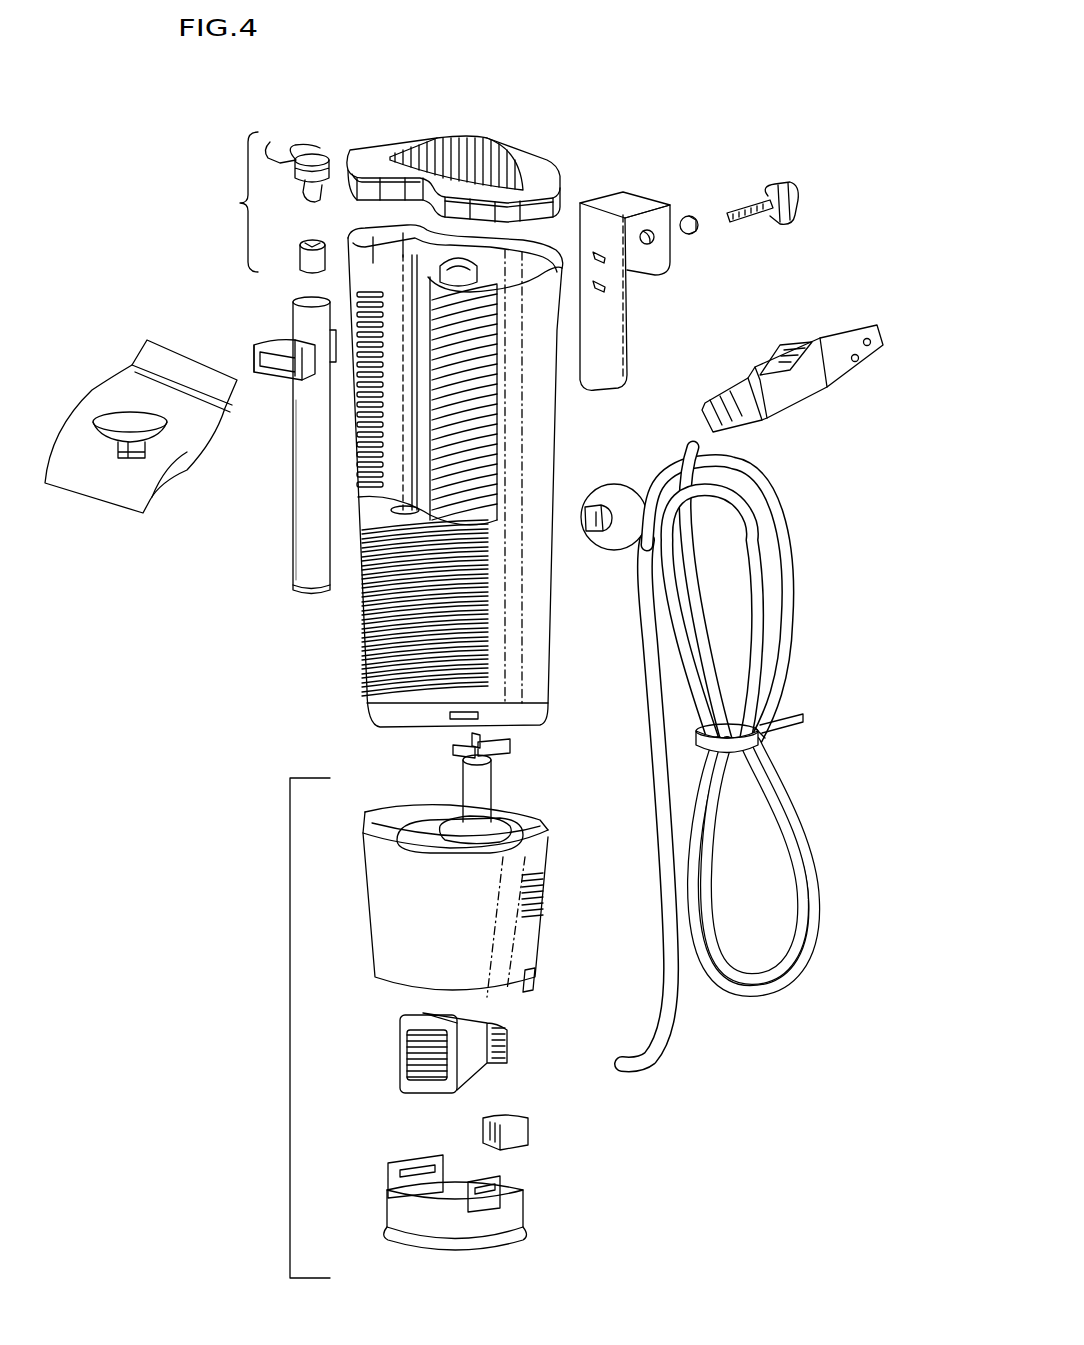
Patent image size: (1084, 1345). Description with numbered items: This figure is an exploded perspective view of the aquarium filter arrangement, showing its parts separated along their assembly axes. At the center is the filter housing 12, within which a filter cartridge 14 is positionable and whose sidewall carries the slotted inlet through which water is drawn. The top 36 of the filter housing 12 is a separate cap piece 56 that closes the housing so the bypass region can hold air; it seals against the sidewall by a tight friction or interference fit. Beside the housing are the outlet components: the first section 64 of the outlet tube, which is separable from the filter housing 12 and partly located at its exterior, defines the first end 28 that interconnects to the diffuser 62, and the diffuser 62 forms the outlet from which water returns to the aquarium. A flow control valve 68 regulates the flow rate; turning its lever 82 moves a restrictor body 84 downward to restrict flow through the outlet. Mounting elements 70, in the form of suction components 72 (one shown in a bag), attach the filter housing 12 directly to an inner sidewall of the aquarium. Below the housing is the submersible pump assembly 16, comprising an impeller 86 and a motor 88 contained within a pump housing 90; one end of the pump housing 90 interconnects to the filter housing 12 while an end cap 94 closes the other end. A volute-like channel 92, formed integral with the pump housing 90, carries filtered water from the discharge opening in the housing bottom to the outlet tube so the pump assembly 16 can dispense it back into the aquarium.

The filter housing 12 is at (533, 455).
The filter cartridge 14 is at (477, 278).
The pump assembly 16 is at (290, 1031).
The first end 28 is at (305, 387).
The top 36 is at (494, 153).
The cap piece 56 is at (519, 163).
The diffuser 62 is at (277, 342).
The first section 64 is at (310, 497).
The flow control valve 68 is at (235, 202).
The mounting elements 70 is at (687, 165).
The suction components 72 is at (132, 412).
The lever 82 is at (277, 140).
The restrictor body 84 is at (300, 252).
The impeller 86 is at (488, 788).
The motor 88 is at (473, 1072).
The pump housing 90 is at (527, 948).
The volute-like channel 92 is at (520, 825).
The end cap 94 is at (523, 1203).